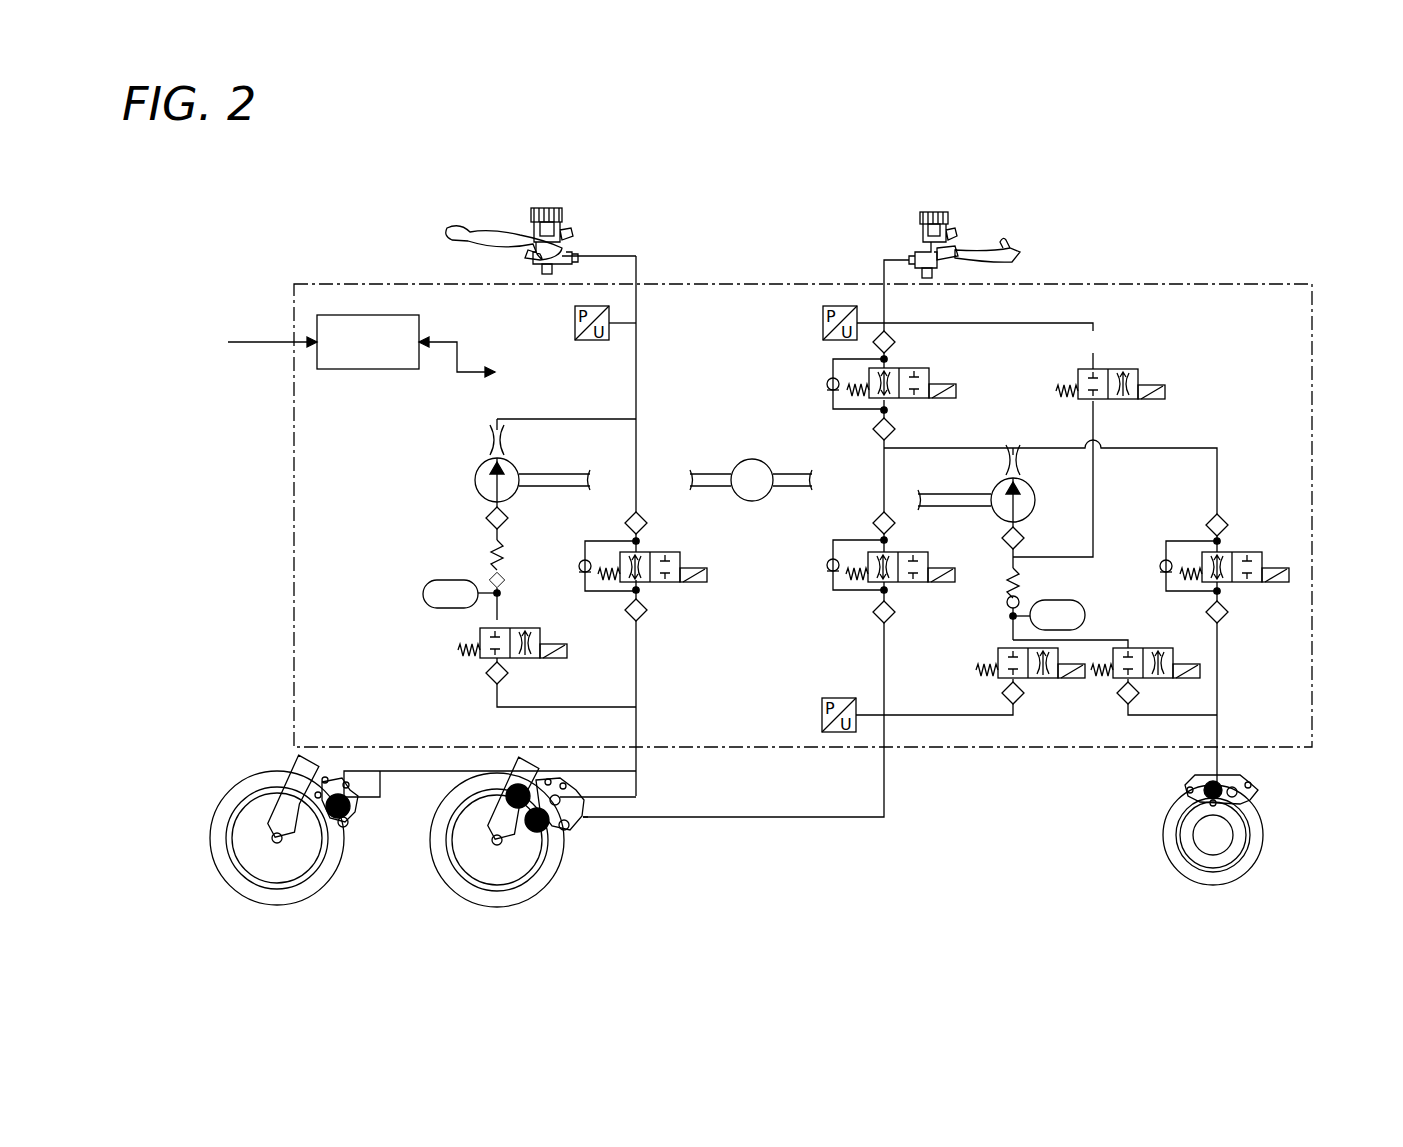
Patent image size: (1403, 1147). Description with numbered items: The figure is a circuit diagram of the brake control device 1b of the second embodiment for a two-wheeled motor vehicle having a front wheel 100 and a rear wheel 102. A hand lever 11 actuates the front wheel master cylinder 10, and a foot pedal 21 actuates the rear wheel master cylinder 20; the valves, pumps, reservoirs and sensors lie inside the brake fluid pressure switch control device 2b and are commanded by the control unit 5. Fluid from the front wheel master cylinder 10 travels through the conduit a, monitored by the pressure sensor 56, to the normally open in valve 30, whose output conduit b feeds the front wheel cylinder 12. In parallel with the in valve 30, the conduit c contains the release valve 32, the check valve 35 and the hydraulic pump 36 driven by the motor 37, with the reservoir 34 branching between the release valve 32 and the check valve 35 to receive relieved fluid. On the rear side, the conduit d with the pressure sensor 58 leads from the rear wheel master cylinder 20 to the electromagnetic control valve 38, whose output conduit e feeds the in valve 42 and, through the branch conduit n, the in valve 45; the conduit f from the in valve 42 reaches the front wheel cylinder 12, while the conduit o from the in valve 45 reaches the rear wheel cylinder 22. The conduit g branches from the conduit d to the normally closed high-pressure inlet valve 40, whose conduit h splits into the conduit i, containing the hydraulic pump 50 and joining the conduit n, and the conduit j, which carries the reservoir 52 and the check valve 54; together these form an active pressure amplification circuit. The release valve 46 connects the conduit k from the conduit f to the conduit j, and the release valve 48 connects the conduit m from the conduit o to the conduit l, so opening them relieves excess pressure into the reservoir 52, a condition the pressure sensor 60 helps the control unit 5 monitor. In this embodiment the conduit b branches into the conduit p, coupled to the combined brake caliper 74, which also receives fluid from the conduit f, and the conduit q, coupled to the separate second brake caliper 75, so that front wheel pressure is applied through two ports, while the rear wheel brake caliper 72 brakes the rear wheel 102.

The brake control device 1b is at (292, 255).
The brake fluid pressure switch control device 2b is at (294, 682).
The control unit 5 is at (363, 369).
The front wheel master cylinder 10 is at (574, 240).
The hand lever 11 is at (447, 232).
The front wheel cylinder 12 is at (352, 760).
The rear wheel master cylinder 20 is at (905, 238).
The foot pedal 21 is at (1037, 245).
The rear wheel cylinder 22 is at (1290, 790).
The in valve 30 is at (680, 590).
The release valve 32 is at (480, 638).
The reservoir 34 is at (423, 594).
The check valve 35 is at (492, 562).
The hydraulic pump 36 is at (475, 478).
The motor 37 is at (752, 459).
The electromagnetic control valve 38 is at (869, 385).
The high-pressure inlet valve 40 is at (1140, 388).
The in valve 42 is at (870, 560).
The in valve 45 is at (1260, 555).
The release valve 46 is at (998, 665).
The release valve 48 is at (1162, 648).
The hydraulic pump 50 is at (990, 515).
The reservoir 52 is at (1085, 600).
The check valve 54 is at (1020, 578).
The pressure sensor 56 is at (575, 325).
The pressure sensor 58 is at (823, 323).
The pressure sensor 60 is at (822, 715).
The rear wheel brake caliper 72 is at (1185, 788).
The combined brake caliper 74 is at (580, 832).
The second brake caliper 75 is at (360, 825).
The front wheel 100 is at (276, 905).
The rear wheel 102 is at (1262, 845).
The conduit a is at (636, 362).
The conduit b is at (636, 680).
The conduit c is at (585, 707).
The conduit d is at (884, 275).
The conduit e is at (884, 468).
The conduit f is at (884, 660).
The conduit g is at (1093, 323).
The conduit h is at (1093, 490).
The conduit i is at (1005, 548).
The conduit j is at (1013, 633).
The conduit k is at (935, 715).
The conduit l is at (1128, 640).
The conduit m is at (1148, 715).
The conduit n is at (983, 448).
The conduit o is at (1217, 660).
The conduit p is at (636, 775).
The conduit q is at (400, 771).